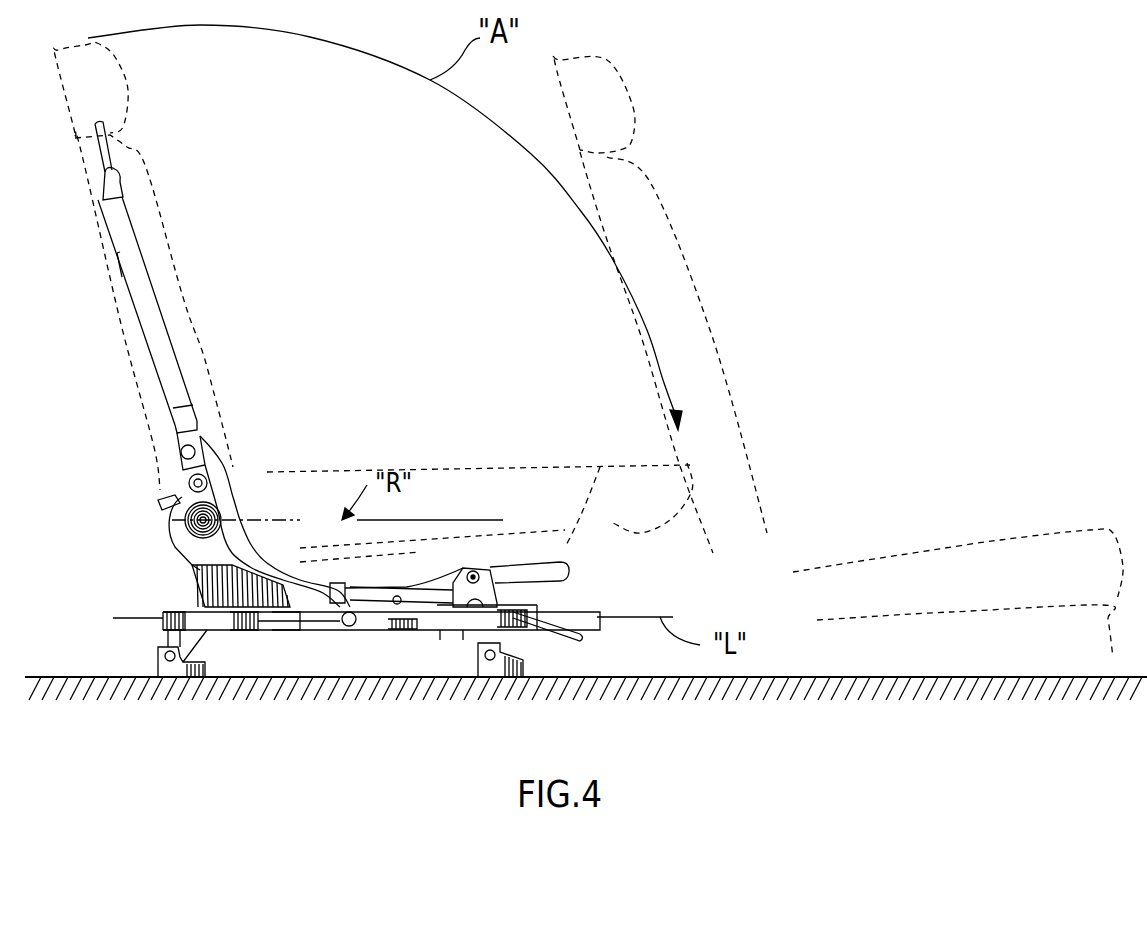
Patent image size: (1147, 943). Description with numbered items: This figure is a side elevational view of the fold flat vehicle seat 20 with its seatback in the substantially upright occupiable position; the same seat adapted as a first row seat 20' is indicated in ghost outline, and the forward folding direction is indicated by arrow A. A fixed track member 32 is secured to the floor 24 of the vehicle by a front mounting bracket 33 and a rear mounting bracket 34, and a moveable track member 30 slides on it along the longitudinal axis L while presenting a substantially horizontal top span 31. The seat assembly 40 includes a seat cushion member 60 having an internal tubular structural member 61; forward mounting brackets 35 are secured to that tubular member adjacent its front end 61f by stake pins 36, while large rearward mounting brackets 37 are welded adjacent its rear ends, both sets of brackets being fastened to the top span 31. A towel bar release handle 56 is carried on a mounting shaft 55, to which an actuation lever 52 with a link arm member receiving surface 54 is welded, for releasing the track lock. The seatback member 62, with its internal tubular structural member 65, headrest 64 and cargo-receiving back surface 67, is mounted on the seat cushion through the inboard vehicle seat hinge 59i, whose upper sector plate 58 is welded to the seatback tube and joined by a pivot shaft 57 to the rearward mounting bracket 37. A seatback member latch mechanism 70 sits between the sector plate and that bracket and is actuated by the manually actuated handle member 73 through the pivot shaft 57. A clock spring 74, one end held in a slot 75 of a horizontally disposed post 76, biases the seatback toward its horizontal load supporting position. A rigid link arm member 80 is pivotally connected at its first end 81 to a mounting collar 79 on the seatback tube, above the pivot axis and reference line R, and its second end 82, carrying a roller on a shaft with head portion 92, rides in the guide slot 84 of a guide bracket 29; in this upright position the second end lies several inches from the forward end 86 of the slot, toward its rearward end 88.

The fold flat vehicle seat 20 is at (243, 266).
The first row seat 20' is at (838, 356).
The floor 24 is at (793, 677).
The guide bracket 29 is at (392, 605).
The moveable track member 30 is at (560, 612).
The substantially horizontal top span 31 is at (540, 597).
The fixed track member 32 is at (520, 617).
The front mounting bracket 33 is at (494, 673).
The rear mounting bracket 34 is at (173, 673).
The forward mounting bracket 35 is at (462, 587).
The stake pin 36 is at (473, 573).
The large rearward mounting bracket 37 is at (207, 577).
The seat assembly 40 is at (365, 425).
The actuation lever 52 is at (467, 612).
The link arm member receiving surface 54 is at (403, 605).
The mounting shaft 55 is at (393, 595).
The release handle 56 is at (533, 610).
The pivot shaft 57 is at (190, 483).
The upper sector plate 58 is at (196, 442).
The inboard vehicle seat hinge 59i is at (158, 521).
The seat cushion member 60 is at (583, 548).
The tubular structural member 61 is at (517, 570).
The front end 61f is at (577, 565).
The seatback member 62 is at (162, 271).
The headrest 64 is at (110, 69).
The tubular structural member 65 is at (167, 364).
The back surface 67 is at (120, 331).
The seatback member latch mechanism 70 is at (240, 483).
The manually actuated handle member 73 is at (163, 507).
The clock spring 74 is at (200, 530).
The slot 75 is at (190, 492).
The horizontally disposed post 76 is at (197, 523).
The mounting collar 79 is at (173, 441).
The link arm member 80 is at (246, 556).
The first end 81 is at (205, 457).
The second end 82 is at (348, 627).
The guide slot 84 is at (297, 623).
The forward end 86 is at (440, 603).
The rearward end 88 is at (275, 620).
The head portion 92 is at (341, 607).